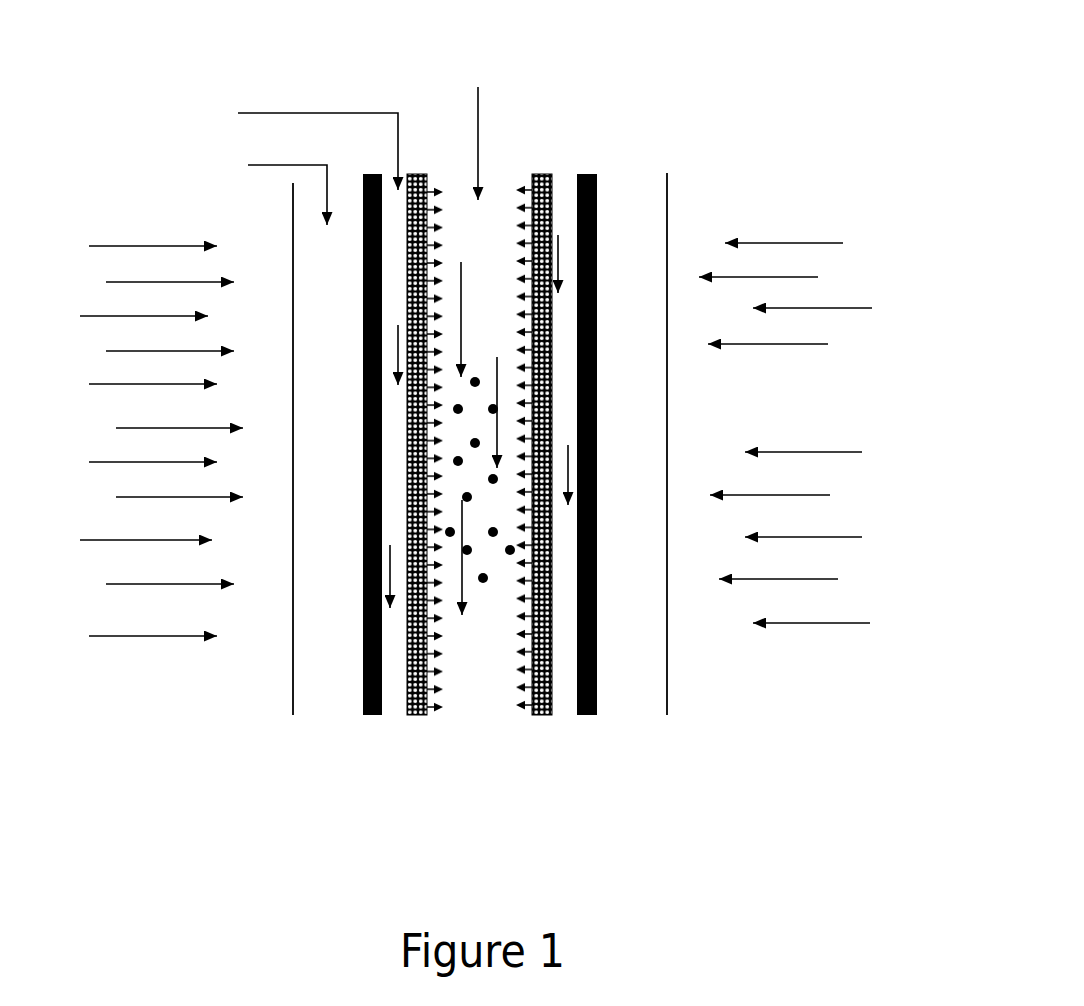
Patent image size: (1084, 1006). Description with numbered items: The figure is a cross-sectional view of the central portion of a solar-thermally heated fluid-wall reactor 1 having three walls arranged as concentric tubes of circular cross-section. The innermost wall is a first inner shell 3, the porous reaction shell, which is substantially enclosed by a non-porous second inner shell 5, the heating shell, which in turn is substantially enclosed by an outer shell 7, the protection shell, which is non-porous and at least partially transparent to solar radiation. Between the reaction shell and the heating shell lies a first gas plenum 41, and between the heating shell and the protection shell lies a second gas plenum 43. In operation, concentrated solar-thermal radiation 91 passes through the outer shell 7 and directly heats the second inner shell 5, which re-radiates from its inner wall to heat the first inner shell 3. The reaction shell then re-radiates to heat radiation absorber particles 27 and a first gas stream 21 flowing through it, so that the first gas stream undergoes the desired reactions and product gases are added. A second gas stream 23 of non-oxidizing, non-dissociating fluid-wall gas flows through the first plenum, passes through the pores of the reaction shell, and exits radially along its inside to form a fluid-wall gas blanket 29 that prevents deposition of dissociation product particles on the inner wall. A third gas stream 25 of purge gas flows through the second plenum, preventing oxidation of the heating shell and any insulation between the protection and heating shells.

The reactor 1 is at (687, 706).
The first inner shell 3 is at (550, 173).
The second inner shell 5 is at (595, 180).
The outer shell 7 is at (667, 223).
The first gas stream 21 is at (479, 329).
The second gas stream 23 is at (294, 354).
The third gas stream 25 is at (257, 184).
The radiation absorber particles 27 is at (472, 543).
The fluid-wall gas blanket 29 is at (523, 182).
The first gas plenum 41 is at (401, 705).
The second gas plenum 43 is at (320, 680).
The concentrated solar-thermal radiation 91 is at (804, 433).